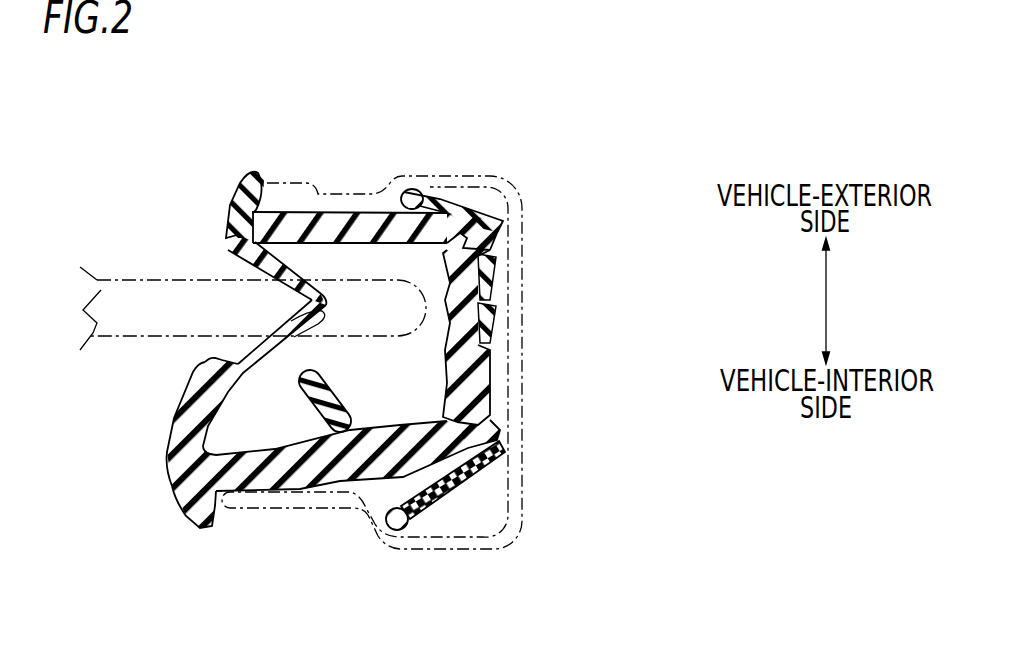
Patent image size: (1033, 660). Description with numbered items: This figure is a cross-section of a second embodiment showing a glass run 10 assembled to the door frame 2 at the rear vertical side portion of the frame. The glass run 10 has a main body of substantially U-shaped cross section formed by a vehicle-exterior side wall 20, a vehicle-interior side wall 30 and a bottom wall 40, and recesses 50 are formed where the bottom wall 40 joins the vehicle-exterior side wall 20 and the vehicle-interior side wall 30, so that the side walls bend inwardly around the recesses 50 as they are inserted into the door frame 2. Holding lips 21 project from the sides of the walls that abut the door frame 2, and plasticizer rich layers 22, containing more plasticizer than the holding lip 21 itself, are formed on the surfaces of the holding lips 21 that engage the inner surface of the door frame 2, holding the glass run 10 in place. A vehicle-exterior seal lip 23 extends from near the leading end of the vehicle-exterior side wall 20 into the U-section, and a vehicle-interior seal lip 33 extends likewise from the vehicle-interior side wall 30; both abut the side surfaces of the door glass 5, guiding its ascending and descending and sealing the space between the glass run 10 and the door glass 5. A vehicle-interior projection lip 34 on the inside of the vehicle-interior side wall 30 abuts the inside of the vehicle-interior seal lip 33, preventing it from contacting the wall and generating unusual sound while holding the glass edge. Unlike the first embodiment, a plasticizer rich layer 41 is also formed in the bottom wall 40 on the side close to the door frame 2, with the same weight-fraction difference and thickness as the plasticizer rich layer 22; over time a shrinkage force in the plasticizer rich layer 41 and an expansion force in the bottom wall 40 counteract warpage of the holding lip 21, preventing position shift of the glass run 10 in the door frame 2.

The door frame 2 is at (437, 362).
The door glass 5 is at (242, 268).
The glass run 10 is at (184, 403).
The vehicle-exterior side wall 20 is at (350, 154).
The holding lip 21 is at (395, 357).
The plasticizer rich layer 22 is at (535, 312).
The vehicle-exterior seal lip 23 is at (201, 156).
The vehicle-interior side wall 30 is at (358, 534).
The vehicle-interior seal lip 33 is at (139, 397).
The vehicle-interior projection lip 34 is at (268, 507).
The bottom wall 40 is at (554, 337).
The plasticizer rich layer 41 is at (572, 298).
The recess 50 is at (557, 354).